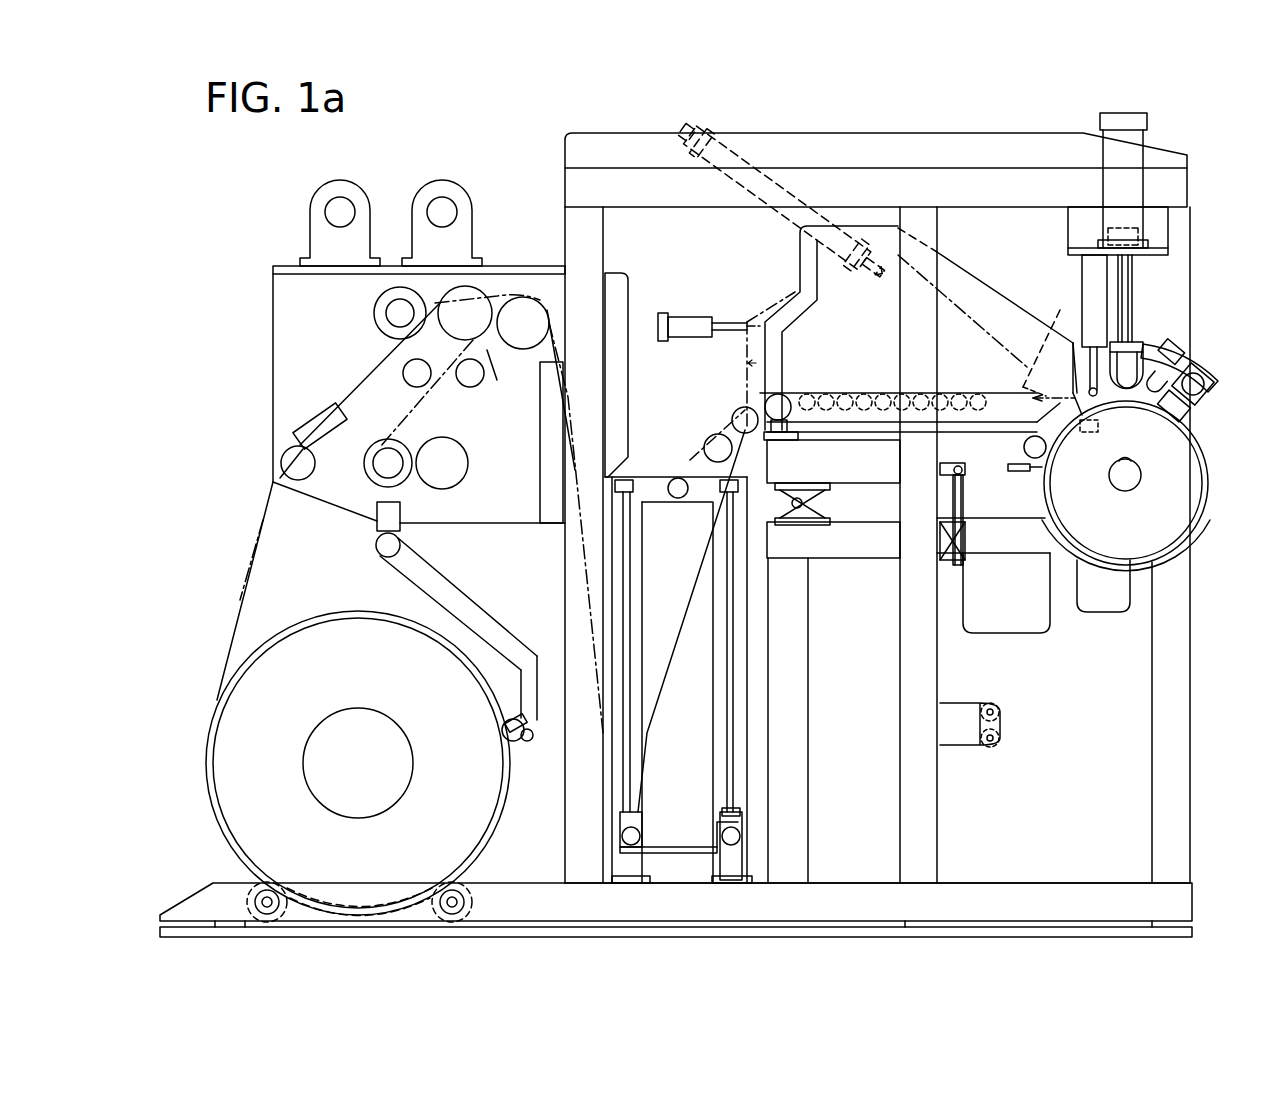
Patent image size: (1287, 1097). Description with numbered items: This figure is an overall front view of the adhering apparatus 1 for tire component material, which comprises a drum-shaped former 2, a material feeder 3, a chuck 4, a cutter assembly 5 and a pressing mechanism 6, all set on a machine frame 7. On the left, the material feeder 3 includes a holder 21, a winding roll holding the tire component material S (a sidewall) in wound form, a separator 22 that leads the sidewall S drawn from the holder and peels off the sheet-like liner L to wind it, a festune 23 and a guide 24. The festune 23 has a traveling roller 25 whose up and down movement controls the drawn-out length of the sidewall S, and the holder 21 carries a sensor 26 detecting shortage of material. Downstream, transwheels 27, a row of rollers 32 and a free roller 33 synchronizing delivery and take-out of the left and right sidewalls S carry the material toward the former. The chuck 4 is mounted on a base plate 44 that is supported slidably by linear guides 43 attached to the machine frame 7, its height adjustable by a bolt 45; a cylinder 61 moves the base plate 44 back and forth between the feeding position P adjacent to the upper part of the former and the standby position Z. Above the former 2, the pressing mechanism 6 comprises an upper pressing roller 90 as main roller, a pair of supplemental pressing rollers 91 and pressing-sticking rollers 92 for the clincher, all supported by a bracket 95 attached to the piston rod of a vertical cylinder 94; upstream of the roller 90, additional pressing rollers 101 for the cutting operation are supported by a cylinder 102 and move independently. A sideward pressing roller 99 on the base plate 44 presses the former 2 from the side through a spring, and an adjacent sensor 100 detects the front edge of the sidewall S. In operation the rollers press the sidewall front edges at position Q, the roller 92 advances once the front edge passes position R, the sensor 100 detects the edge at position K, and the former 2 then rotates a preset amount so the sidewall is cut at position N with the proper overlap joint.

The adhering apparatus 1 is at (1197, 138).
The drum-shaped former 2 is at (1193, 507).
The material feeder 3 is at (243, 514).
The chuck 4 is at (1049, 342).
The cutter assembly 5 is at (905, 262).
The pressing mechanism 6 is at (1159, 273).
The machine frame 7 is at (636, 183).
The holder 21 is at (345, 632).
The separator 22 is at (361, 357).
The festune 23 is at (655, 745).
The guide 24 is at (725, 392).
The traveling roller 25 is at (645, 832).
The sensor 26 is at (519, 748).
The transwheels 27 is at (708, 428).
The feed rollers 32 is at (862, 374).
The free roller 33 is at (745, 407).
The linear guides 43 is at (782, 394).
The base plate 44 is at (1000, 293).
The bolt 45 is at (966, 500).
The cylinder 61 is at (676, 316).
The upper pressing roller 90 is at (1170, 345).
The supplemental pressing rollers 91 is at (1200, 360).
The pressing-sticking rollers for clincher 92 is at (1195, 416).
The cylinder 94 is at (1147, 130).
The bracket 95 is at (1137, 340).
The sideward pressing roller 99 is at (1022, 448).
The sensor 100 is at (958, 520).
The additional pressing rollers 101 is at (1100, 320).
The cylinder 102 is at (1118, 270).
The tire component material S is at (505, 288).
The liner L is at (501, 374).
The standby position Z is at (760, 298).
The feeding position P is at (1075, 343).
The cutting position N is at (1075, 400).
The position Q is at (1125, 405).
The position R is at (1160, 418).
The position K is at (1043, 462).